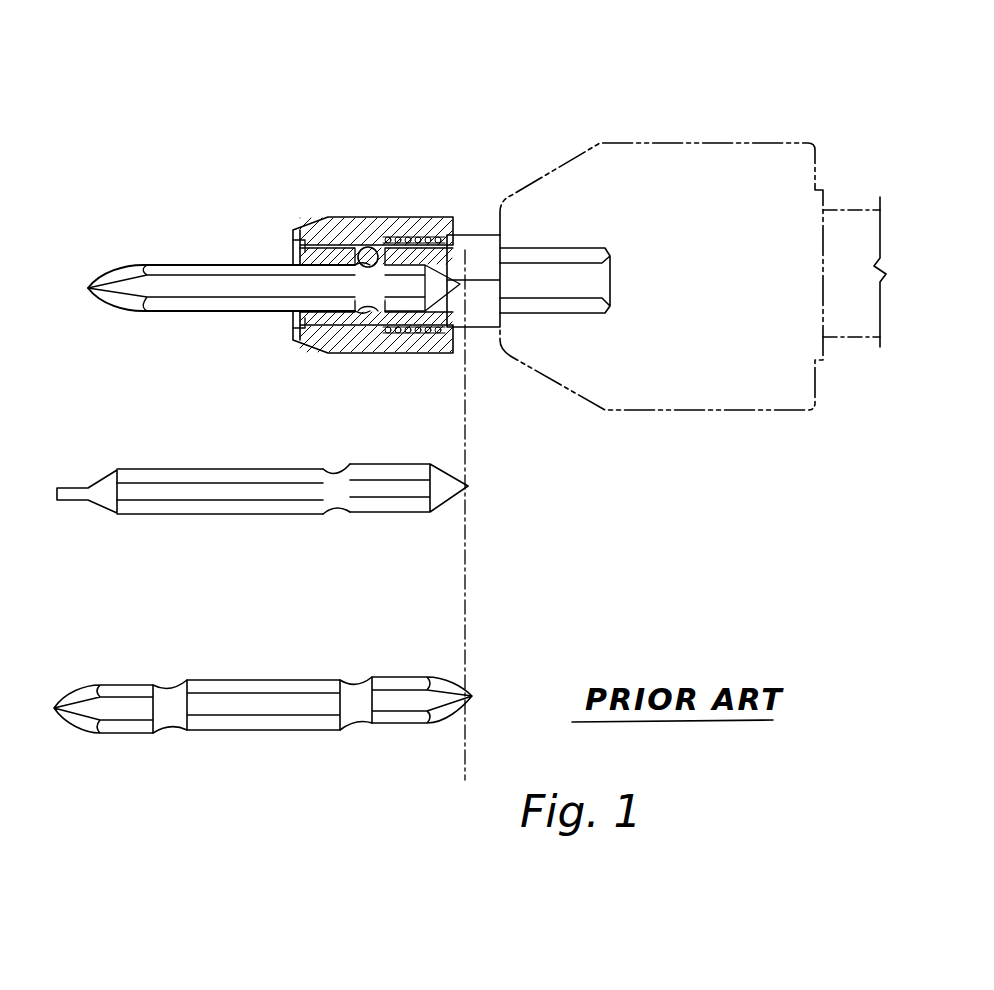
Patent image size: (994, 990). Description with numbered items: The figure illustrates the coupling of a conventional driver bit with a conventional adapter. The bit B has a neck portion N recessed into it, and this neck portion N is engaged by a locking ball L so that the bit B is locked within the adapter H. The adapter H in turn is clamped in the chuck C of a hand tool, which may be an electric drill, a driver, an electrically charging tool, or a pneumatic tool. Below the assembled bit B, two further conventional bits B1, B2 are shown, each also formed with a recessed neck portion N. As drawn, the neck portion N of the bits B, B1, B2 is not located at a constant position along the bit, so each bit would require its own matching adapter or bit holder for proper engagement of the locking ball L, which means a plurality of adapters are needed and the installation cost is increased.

The bit B is at (191, 265).
The bit B1 is at (176, 466).
The bit B2 is at (222, 680).
The chuck C is at (690, 143).
The adapter H is at (472, 253).
The locking ball L is at (364, 247).
The neck portion N is at (360, 353).